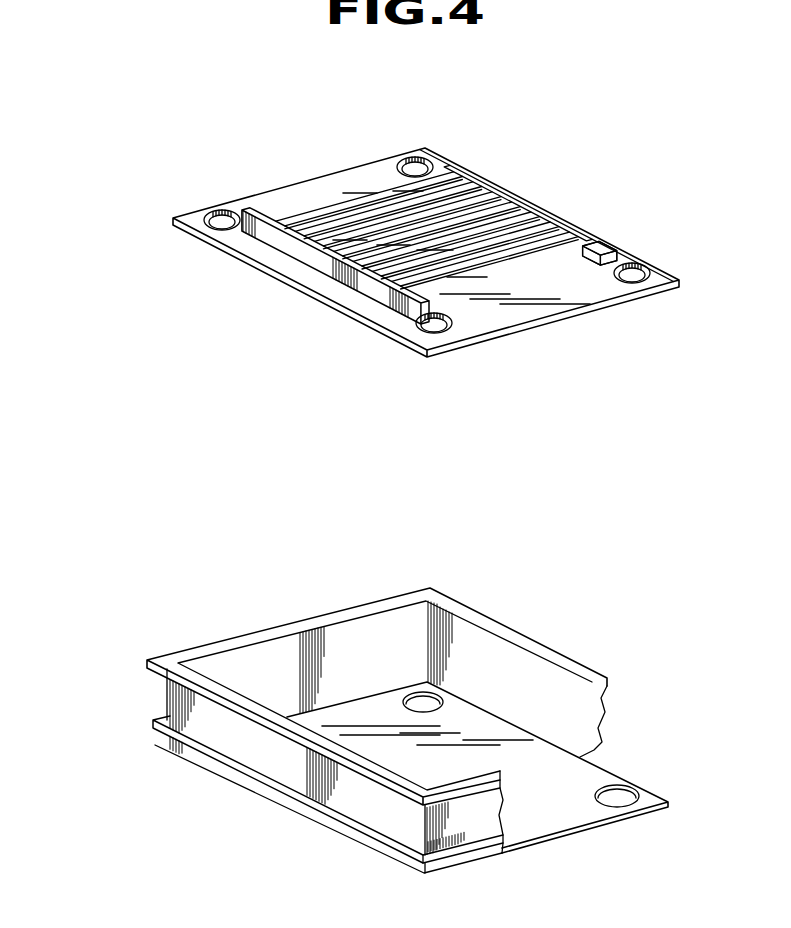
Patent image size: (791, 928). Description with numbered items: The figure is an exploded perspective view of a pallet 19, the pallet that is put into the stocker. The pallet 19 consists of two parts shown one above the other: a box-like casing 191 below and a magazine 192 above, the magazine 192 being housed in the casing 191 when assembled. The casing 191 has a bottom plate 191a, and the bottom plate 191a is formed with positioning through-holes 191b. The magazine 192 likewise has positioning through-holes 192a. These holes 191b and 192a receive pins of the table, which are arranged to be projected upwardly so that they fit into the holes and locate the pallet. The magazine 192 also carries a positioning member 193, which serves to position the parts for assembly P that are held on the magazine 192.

The pallet 19 is at (97, 798).
The casing 191 is at (429, 714).
The bottom plate 191a is at (593, 773).
The positioning through-hole 191b is at (638, 790).
The magazine 192 is at (368, 172).
The positioning through-hole 192a is at (648, 262).
The positioning member 193 is at (613, 247).
The parts for assembly P is at (293, 208).